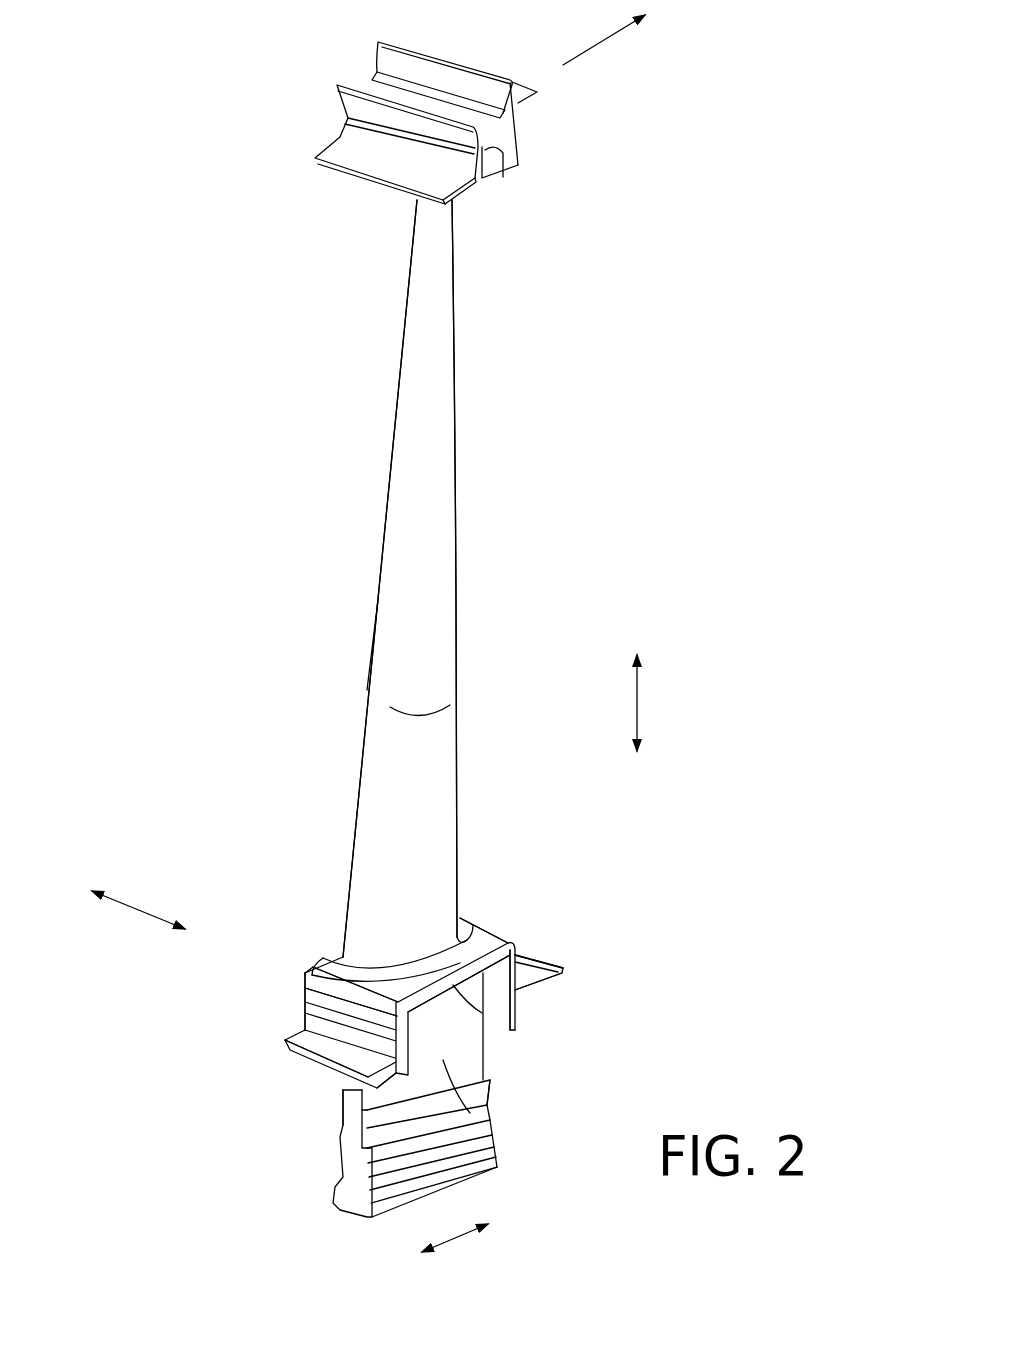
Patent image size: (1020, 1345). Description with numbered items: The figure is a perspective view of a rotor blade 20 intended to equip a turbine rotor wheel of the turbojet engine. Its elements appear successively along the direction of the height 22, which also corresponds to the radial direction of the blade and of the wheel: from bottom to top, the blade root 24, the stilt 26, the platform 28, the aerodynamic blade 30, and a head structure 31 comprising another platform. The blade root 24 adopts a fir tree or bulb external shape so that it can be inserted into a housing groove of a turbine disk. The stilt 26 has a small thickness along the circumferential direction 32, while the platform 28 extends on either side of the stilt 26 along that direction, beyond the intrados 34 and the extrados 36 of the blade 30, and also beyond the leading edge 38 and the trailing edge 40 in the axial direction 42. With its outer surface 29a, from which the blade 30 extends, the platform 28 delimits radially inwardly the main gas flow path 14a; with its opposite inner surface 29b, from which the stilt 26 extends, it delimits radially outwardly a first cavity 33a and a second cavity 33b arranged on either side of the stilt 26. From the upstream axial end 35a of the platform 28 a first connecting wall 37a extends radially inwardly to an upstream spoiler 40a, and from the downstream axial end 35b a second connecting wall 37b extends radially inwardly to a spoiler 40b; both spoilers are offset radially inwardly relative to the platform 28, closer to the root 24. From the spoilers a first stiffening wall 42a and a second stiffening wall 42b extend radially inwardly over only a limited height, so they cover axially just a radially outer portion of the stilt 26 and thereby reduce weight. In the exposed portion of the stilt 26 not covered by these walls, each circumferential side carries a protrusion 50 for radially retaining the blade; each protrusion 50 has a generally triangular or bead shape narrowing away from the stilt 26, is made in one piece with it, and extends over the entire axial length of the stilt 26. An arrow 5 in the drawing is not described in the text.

The flow direction 5 is at (610, 43).
The main gas flow path 14a is at (543, 470).
The rotor blade 20 is at (226, 606).
The direction of the height 22 is at (637, 703).
The blade root 24 is at (352, 1203).
The stilt 26 is at (488, 1115).
The platform 28 is at (426, 972).
The outer surface 29a is at (318, 960).
The inner surface 29b is at (497, 1020).
The blade 30 is at (428, 806).
The head structure 31 is at (524, 168).
The circumferential direction 32 is at (140, 912).
The first cavity 33a is at (466, 1047).
The second cavity 33b is at (300, 1000).
The intrados 34 is at (366, 690).
The upstream axial end 35a is at (303, 978).
The downstream axial end 35b is at (500, 933).
The extrados 36 is at (390, 707).
The first connecting wall 37a is at (298, 1018).
The second connecting wall 37b is at (520, 995).
The leading edge 38 is at (372, 630).
The trailing edge 40 is at (456, 577).
The upstream spoiler 40a is at (300, 1072).
The spoiler 40b is at (545, 965).
The axial direction 42 is at (453, 1237).
The first stiffening wall 42a is at (343, 1107).
The second stiffening wall 42b is at (525, 1010).
The protrusion 50 is at (340, 1127).